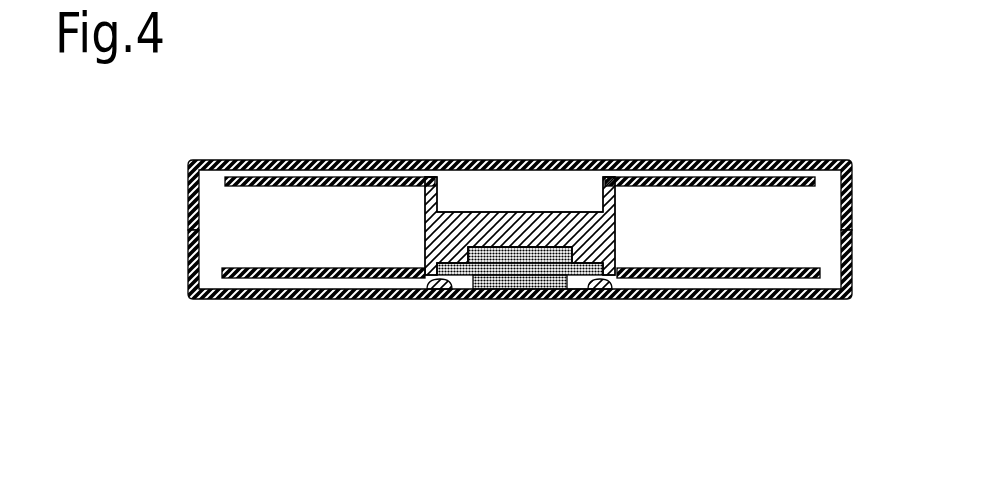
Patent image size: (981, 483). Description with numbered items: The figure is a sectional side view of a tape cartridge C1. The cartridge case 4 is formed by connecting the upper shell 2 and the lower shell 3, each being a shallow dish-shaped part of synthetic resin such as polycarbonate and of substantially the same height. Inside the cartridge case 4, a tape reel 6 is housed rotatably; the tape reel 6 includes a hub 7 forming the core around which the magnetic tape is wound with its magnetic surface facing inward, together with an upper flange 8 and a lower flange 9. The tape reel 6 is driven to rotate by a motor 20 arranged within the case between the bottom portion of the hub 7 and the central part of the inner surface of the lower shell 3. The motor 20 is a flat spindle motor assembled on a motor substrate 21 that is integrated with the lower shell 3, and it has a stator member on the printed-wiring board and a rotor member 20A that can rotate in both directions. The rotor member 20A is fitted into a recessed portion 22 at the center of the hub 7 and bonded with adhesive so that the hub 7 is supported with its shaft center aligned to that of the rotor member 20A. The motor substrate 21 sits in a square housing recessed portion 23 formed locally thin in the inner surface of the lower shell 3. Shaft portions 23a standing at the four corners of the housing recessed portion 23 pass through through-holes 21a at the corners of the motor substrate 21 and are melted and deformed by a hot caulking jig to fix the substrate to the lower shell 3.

The tape cartridge C1 is at (260, 127).
The upper shell 2 is at (187, 193).
The lower shell 3 is at (187, 267).
The cartridge case 4 is at (92, 195).
The tape reel 6 is at (807, 385).
The hub 7 is at (612, 230).
The upper flange 8 is at (728, 185).
The lower flange 9 is at (797, 280).
The motor 20 is at (612, 183).
The rotor member 20A is at (525, 250).
The motor substrate 21 is at (520, 302).
The through-holes 21a is at (595, 302).
The recessed portion 22 is at (483, 247).
The housing recessed portion 23 is at (408, 302).
The shaft portions 23a is at (600, 302).